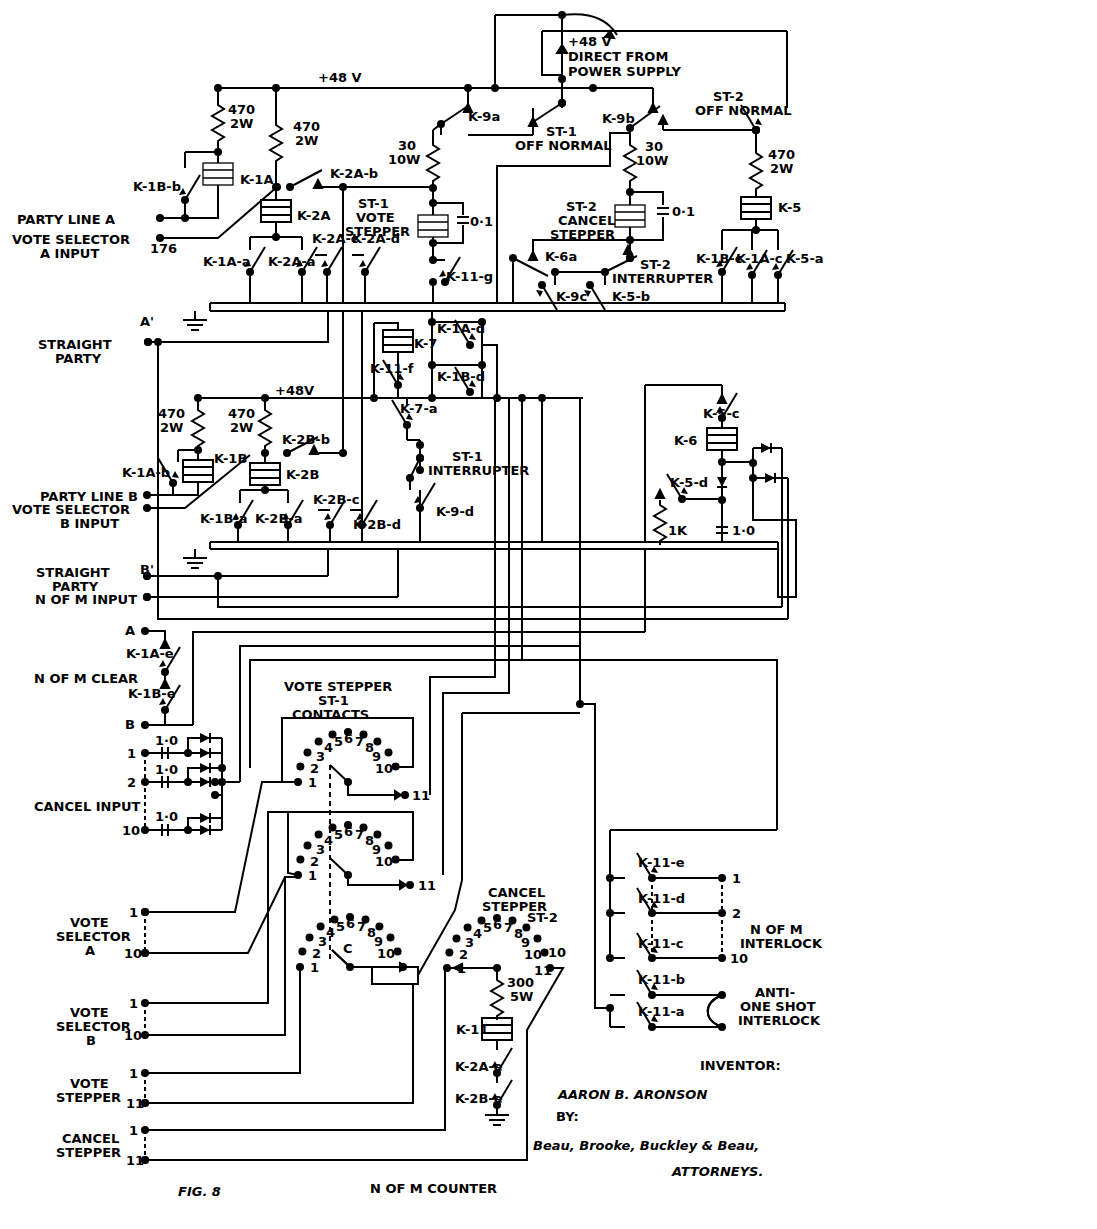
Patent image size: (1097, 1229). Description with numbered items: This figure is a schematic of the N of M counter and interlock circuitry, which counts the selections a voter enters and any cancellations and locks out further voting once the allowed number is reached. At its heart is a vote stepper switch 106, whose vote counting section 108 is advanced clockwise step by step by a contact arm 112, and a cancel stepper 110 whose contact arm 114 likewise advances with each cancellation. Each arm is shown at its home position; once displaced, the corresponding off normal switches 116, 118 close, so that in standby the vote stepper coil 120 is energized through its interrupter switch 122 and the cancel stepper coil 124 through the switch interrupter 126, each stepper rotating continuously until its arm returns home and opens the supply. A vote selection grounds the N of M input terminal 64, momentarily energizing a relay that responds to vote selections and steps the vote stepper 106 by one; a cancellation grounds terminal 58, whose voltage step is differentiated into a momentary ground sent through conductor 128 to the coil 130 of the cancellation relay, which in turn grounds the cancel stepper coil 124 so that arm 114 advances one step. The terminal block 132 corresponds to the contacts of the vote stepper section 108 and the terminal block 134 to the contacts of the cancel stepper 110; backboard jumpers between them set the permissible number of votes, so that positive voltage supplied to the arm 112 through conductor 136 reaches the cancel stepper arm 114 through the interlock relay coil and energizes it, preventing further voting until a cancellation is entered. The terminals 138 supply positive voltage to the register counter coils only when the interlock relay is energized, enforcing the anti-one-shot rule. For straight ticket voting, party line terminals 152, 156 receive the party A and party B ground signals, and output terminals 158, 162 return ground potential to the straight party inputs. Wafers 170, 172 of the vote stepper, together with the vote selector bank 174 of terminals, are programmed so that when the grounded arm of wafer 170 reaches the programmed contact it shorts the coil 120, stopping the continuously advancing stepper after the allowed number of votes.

The cancel input terminal 58 is at (145, 752).
The N of M input terminal 64 is at (146, 598).
The vote stepper switch 106 is at (326, 906).
The vote counting section 108 is at (332, 968).
The cancel stepper 110 is at (484, 947).
The vote stepper contact arm 112 is at (384, 998).
The cancel stepper contact arm 114 is at (462, 970).
The vote stepper off normal switch 116 is at (548, 112).
The cancel stepper off normal switch 118 is at (782, 124).
The vote stepper coil 120 is at (447, 226).
The vote stepper interrupter switch 122 is at (434, 461).
The cancel stepper coil 124 is at (656, 222).
The cancel stepper interrupter switch 126 is at (636, 257).
The conductor 128 is at (250, 730).
The relay coil 130 is at (737, 438).
The vote stepper terminal block 132 is at (145, 1096).
The cancel stepper terminal block 134 is at (145, 1152).
The conductor 136 is at (510, 712).
The anti-one-shot terminals 138 is at (720, 1030).
The party line terminal A 152 is at (166, 212).
The party line terminal B 156 is at (148, 493).
The straight party output terminal 158 is at (150, 347).
The straight party output terminal 162 is at (145, 576).
The vote stepper wafer 170 is at (357, 770).
The vote stepper wafer 172 is at (357, 863).
The vote selector terminal bank 174 is at (150, 950).